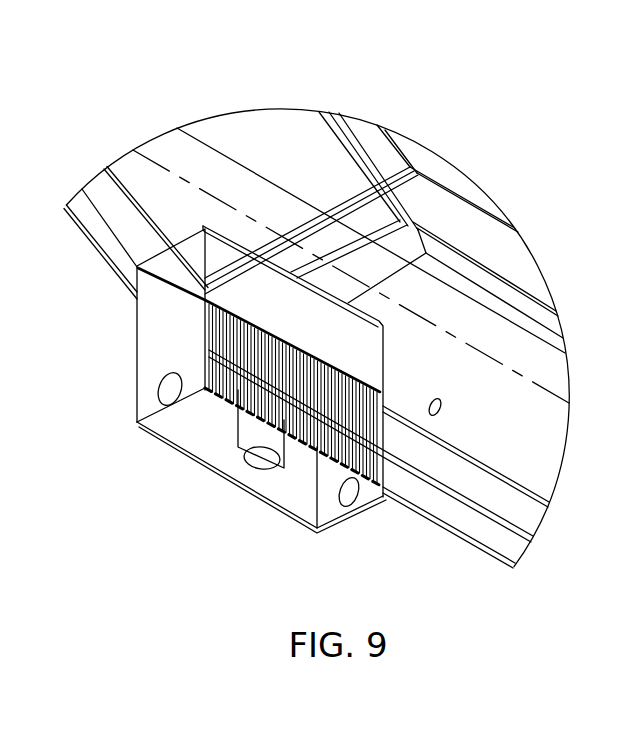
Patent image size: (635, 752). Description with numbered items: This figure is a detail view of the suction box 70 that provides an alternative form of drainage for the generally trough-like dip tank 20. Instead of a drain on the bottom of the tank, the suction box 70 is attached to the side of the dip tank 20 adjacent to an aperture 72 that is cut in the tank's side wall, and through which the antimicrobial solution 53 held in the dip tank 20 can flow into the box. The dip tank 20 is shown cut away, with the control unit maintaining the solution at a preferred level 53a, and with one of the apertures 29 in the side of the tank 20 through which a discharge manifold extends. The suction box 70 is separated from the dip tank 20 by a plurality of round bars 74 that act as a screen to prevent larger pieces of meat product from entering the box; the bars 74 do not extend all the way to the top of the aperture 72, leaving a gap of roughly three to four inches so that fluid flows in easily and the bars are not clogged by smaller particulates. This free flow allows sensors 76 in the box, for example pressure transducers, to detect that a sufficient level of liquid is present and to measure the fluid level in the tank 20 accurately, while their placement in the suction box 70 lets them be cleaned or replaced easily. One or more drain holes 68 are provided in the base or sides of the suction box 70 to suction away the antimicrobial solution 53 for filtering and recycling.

The dip tank 20 is at (512, 426).
The apertures 29 is at (444, 401).
The antimicrobial solution 53 is at (488, 300).
The preferred level 53a is at (547, 387).
The drain holes 68 is at (160, 393).
The suction box 70 is at (293, 522).
The aperture 72 is at (385, 325).
The round bars 74 is at (380, 422).
The sensors 76 is at (253, 433).